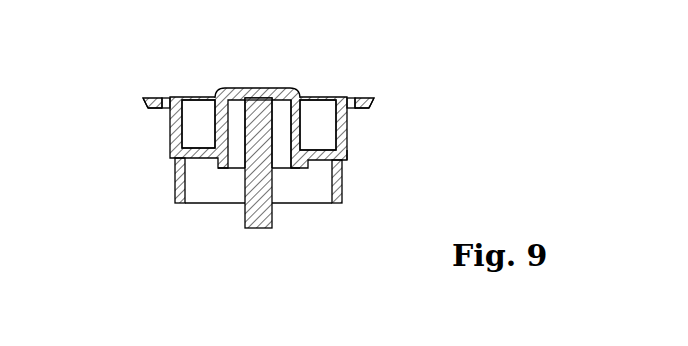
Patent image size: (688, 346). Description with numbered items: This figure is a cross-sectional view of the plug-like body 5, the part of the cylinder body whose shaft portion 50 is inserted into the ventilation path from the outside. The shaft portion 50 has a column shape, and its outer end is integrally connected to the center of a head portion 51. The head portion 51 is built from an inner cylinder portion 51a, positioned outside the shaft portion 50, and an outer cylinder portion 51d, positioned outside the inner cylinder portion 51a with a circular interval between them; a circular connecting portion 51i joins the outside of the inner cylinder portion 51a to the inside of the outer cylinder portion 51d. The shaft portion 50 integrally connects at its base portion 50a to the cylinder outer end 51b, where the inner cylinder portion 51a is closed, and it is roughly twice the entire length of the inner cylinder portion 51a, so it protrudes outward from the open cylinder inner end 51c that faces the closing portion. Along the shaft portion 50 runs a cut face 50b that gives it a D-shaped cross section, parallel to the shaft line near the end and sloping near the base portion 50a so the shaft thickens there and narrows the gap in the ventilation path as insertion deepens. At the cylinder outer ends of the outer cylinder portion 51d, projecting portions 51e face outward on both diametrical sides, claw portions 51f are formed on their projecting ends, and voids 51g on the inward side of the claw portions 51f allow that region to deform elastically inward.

The plug-like body 5 is at (373, 100).
The shaft portion 50 is at (250, 229).
The base portion 50a is at (257, 97).
The cut face 50b is at (274, 143).
The head portion 51 is at (342, 98).
The inner cylinder portion 51a is at (207, 98).
The cylinder outer end 51b is at (279, 97).
The cylinder inner end 51c is at (218, 168).
The outer cylinder portion 51d is at (347, 150).
The projecting portions 51e is at (150, 109).
The claw portions 51f is at (145, 99).
The voids 51g is at (163, 98).
The circular connecting portion 51i is at (317, 163).